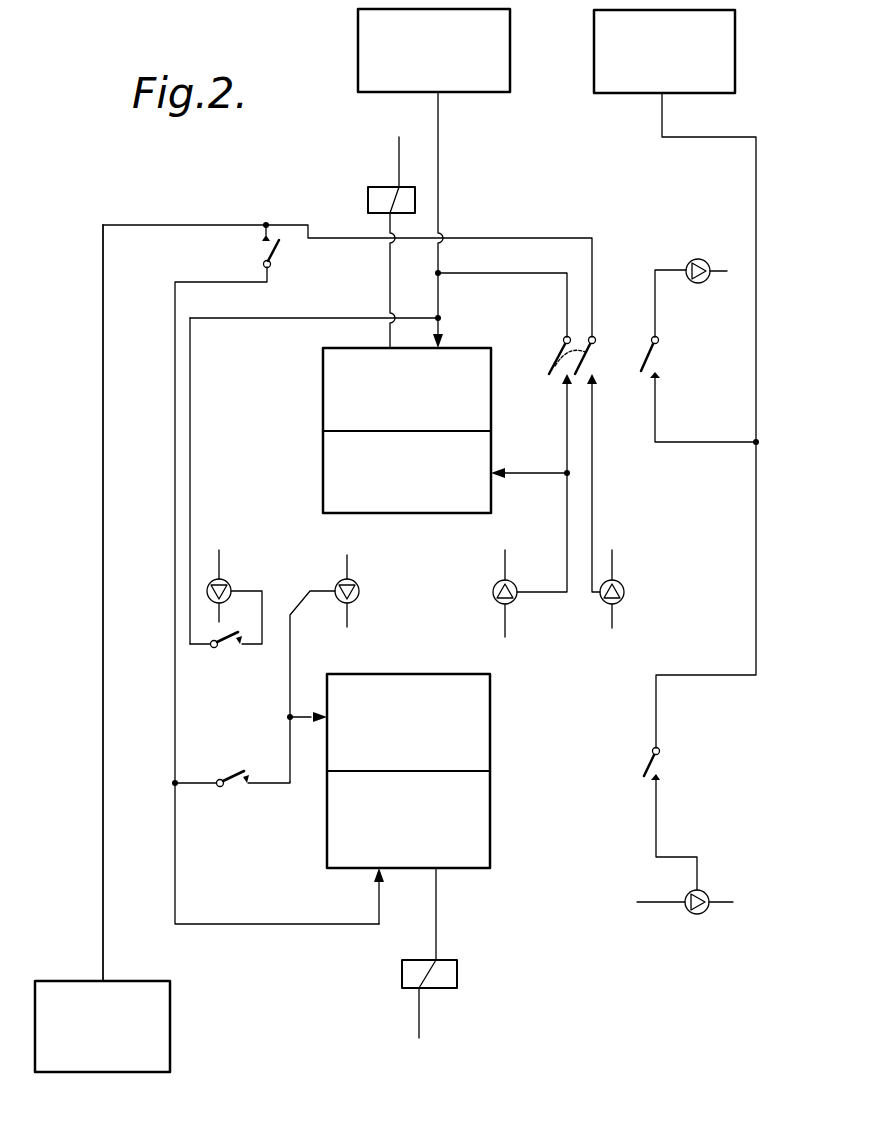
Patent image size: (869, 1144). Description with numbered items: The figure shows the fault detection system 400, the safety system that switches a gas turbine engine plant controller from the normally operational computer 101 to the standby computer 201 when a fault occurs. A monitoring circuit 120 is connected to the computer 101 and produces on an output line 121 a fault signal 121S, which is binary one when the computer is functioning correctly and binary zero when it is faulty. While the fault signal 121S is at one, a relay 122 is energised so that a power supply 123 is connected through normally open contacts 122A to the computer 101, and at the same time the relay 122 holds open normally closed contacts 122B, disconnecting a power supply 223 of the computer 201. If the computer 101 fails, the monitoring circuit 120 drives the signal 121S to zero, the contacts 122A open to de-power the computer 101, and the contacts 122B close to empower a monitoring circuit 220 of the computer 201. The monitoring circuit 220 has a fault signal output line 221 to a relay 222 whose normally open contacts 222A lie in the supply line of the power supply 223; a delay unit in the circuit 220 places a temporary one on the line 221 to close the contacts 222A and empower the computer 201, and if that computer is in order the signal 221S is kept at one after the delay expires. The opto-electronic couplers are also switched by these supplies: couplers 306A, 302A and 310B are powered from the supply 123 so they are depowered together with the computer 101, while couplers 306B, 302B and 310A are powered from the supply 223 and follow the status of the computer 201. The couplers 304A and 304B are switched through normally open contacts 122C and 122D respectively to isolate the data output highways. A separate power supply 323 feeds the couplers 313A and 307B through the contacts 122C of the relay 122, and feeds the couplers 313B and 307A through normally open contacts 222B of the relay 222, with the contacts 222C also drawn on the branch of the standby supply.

The power supply 123 is at (357, 52).
The power supply 323 is at (735, 53).
The power supply 223 is at (171, 1010).
The relay 122 is at (380, 187).
The output line 121 is at (346, 280).
The fault signal 121S is at (387, 261).
The normally closed contacts 122B is at (264, 253).
The monitoring circuit 120 is at (378, 425).
The computer 101 is at (405, 478).
The normally open contacts 122A is at (556, 356).
The normally open contacts 122D is at (549, 465).
The normally open contacts 122C is at (659, 358).
The opto-electronic coupler 313A is at (699, 246).
The opto-electronic coupler 307B is at (690, 261).
The opto-electronic coupler 304A is at (623, 585).
The opto-electronic coupler 306A is at (550, 630).
The opto-electronic coupler 302A is at (547, 630).
The opto-electronic coupler 310B is at (510, 605).
The opto-electronic coupler 306B is at (369, 663).
The opto-electronic coupler 302B is at (369, 668).
The opto-electronic coupler 310A is at (359, 591).
The opto-electronic coupler 304B is at (228, 581).
The relay contact 222C is at (226, 650).
The normally open contacts 222A is at (238, 777).
The monitoring circuit 220 is at (446, 771).
The computer 201 is at (407, 719).
The fault signal output line 221 is at (493, 914).
The fault signal 221S is at (438, 912).
The relay 222 is at (458, 976).
The normally open contacts 222B is at (660, 764).
The opto-electronic coupler 313B is at (697, 935).
The opto-electronic coupler 307A is at (688, 913).
The fault detection system 400 is at (95, 597).